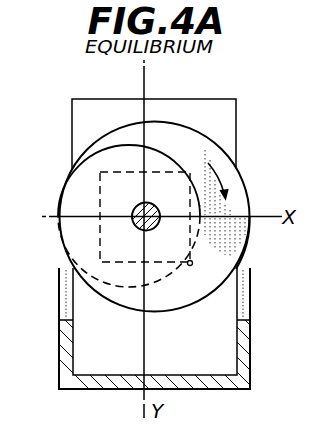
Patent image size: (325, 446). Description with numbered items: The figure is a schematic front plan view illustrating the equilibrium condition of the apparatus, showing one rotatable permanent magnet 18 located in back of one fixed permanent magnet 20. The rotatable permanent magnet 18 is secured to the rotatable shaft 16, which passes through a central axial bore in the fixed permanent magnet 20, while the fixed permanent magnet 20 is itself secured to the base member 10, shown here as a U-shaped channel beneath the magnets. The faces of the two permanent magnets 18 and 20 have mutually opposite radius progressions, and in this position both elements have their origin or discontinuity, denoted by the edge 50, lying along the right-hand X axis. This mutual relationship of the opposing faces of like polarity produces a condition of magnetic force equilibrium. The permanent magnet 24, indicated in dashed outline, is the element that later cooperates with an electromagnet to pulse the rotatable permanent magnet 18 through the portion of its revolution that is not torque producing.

The base member 10 is at (250, 343).
The rotatable shaft 16 is at (133, 222).
The rotatable permanent magnet 18 is at (240, 175).
The fixed permanent magnet 20 is at (251, 235).
The permanent magnet 24 is at (100, 196).
The edge 50 is at (248, 203).